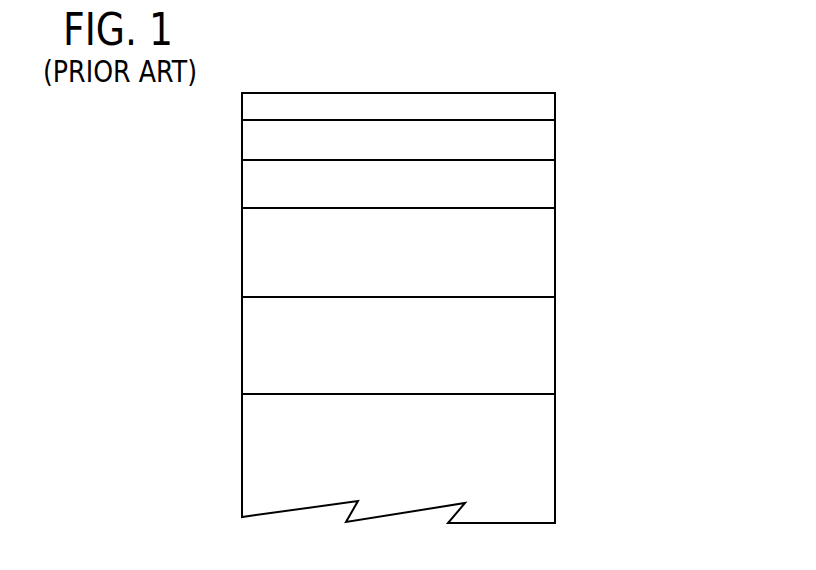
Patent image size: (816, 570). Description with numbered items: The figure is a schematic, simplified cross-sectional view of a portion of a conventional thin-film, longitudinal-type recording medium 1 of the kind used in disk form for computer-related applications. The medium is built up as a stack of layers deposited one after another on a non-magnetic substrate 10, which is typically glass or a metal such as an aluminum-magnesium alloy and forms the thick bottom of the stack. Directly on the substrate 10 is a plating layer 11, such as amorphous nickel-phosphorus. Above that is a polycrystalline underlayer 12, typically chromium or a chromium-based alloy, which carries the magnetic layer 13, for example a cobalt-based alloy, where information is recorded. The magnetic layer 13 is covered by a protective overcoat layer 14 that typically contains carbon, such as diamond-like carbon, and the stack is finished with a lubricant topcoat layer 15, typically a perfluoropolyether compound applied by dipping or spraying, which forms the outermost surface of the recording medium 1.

The thin-film, longitudinal-type recording medium 1 is at (662, 138).
The non-magnetic substrate 10 is at (555, 459).
The plating layer 11 is at (555, 353).
The polycrystalline underlayer 12 is at (555, 253).
The magnetic layer 13 is at (555, 187).
The protective overcoat layer 14 is at (555, 142).
The lubricant topcoat layer 15 is at (555, 103).